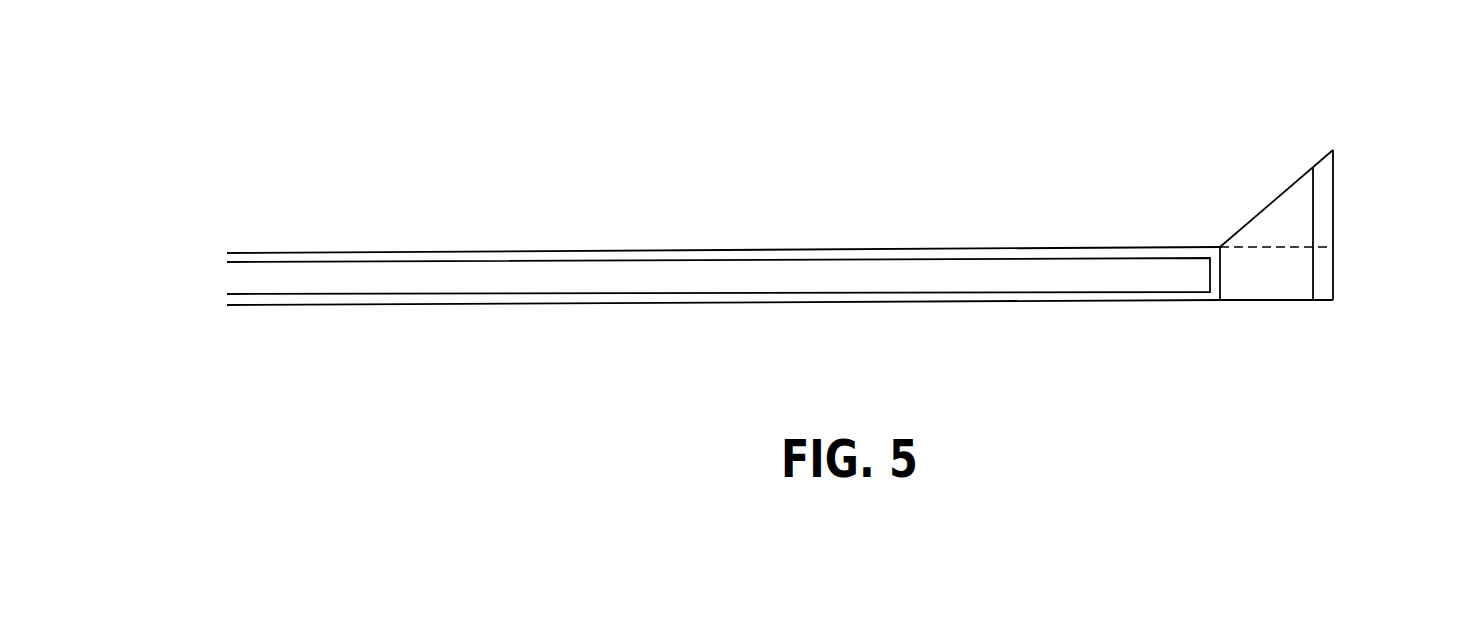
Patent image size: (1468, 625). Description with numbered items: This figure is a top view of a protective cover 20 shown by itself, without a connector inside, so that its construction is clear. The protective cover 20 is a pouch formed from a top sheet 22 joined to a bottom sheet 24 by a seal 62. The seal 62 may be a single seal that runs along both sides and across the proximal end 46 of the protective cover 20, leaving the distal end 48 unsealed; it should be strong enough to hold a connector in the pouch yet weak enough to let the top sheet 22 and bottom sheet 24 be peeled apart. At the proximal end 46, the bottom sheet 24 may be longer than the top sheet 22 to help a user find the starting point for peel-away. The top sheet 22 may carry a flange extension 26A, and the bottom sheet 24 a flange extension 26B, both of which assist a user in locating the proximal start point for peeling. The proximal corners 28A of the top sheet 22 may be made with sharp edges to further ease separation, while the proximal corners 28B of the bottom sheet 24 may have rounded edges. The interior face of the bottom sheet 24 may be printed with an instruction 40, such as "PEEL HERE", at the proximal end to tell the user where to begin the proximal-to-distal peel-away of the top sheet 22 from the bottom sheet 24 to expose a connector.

The protective cover 20 is at (976, 96).
The top sheet 22 is at (1249, 277).
The bottom sheet 24 is at (1325, 265).
The flange extension 26A is at (1268, 227).
The flange extension 26B is at (1322, 207).
The proximal corners 28A is at (1313, 167).
The proximal corners 28B is at (1333, 150).
The instruction 40 is at (1290, 268).
The proximal end 46 is at (1362, 224).
The distal end 48 is at (213, 280).
The seal 62 is at (748, 255).